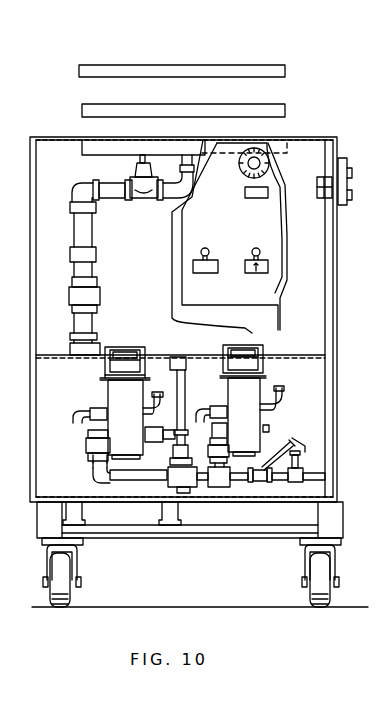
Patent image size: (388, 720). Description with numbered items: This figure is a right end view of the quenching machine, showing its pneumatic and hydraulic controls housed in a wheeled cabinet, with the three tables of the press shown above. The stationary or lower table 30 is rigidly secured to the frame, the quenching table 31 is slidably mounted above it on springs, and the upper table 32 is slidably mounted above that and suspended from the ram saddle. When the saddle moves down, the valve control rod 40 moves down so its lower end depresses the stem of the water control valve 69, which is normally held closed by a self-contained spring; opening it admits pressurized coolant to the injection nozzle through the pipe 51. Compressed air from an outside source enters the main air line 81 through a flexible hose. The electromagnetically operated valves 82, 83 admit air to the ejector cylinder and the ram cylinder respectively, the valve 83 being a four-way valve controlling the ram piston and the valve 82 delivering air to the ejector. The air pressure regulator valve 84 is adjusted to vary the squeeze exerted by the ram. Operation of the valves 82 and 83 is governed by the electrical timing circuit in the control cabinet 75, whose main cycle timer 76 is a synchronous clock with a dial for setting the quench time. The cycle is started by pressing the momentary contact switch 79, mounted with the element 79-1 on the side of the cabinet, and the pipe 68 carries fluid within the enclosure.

The stationary or lower table 30 is at (290, 139).
The quenching table 31 is at (284, 105).
The upper table 32 is at (284, 66).
The valve control rod 40 is at (138, 159).
The pipe 51 is at (156, 200).
The vertical pipe 68 is at (77, 230).
The water control valve 69 is at (140, 199).
The control cabinet 75 is at (172, 252).
The main cycle timer 76 is at (245, 171).
The momentary contact switch 79 is at (354, 174).
The hinge pin 79-1 is at (352, 198).
The main air line 81 is at (306, 481).
The electromagnetically operated valve 82 is at (232, 386).
The electromagnetically operated valve 83 is at (115, 388).
The air pressure regulator valve 84 is at (193, 488).